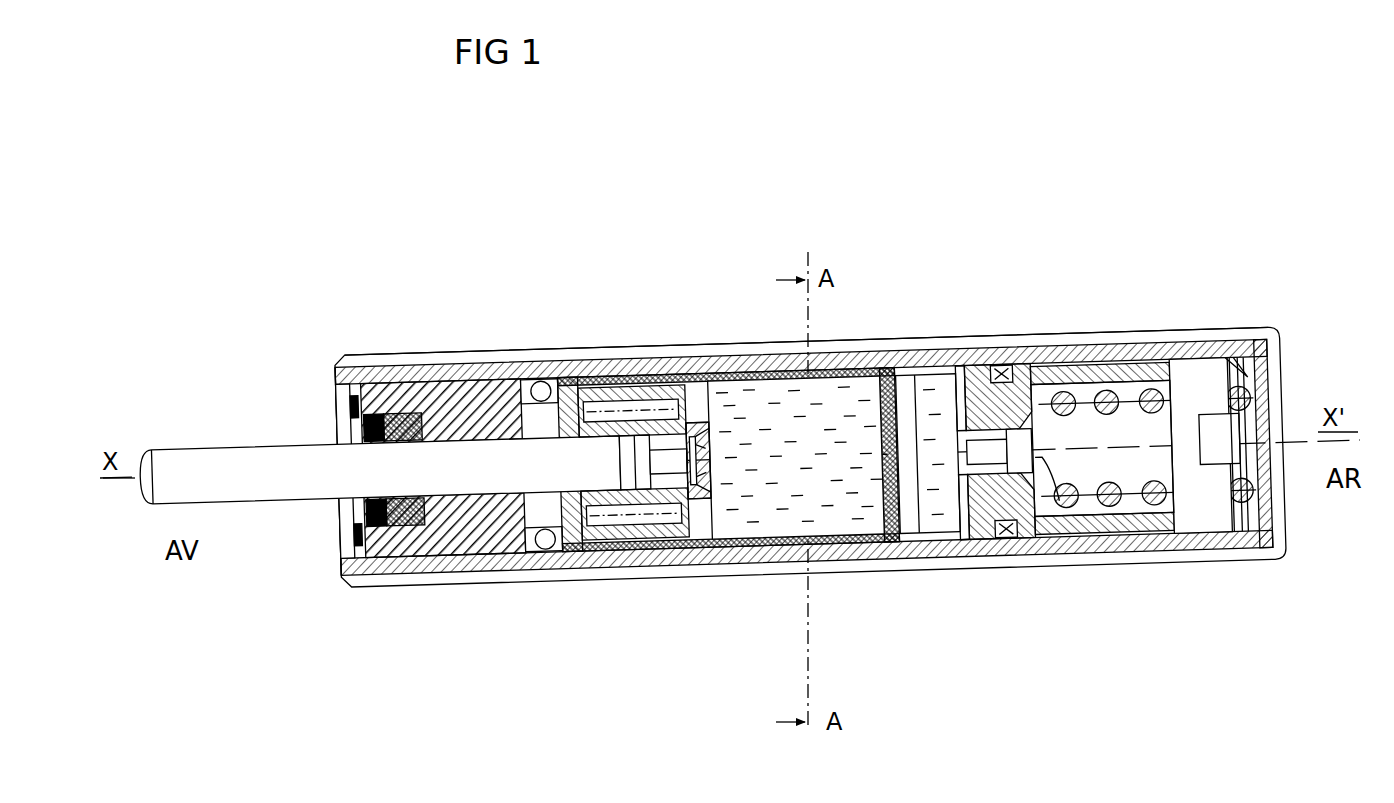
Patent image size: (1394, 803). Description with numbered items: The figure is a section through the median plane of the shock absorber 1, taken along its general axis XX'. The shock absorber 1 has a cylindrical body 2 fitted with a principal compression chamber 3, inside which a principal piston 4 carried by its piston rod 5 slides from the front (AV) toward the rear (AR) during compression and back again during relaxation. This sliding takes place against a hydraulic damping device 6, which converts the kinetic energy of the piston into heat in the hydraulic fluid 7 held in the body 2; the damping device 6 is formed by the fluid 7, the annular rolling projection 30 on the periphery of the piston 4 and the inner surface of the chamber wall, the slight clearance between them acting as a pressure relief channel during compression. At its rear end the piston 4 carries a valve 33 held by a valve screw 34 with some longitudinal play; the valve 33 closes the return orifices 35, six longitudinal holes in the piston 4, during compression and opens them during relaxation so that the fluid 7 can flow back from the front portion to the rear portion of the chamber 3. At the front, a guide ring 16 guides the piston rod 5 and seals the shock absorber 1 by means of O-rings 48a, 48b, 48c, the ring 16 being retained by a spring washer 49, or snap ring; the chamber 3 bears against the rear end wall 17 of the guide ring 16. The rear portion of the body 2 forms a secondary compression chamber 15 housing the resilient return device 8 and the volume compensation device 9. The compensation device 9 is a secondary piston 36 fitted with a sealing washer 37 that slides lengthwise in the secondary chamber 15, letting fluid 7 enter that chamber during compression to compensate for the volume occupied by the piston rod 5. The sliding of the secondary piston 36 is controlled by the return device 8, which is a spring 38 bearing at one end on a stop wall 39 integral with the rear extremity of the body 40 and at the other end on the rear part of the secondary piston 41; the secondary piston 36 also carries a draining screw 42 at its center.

The shock absorber 1 is at (825, 184).
The body 2 is at (406, 356).
The principal compression chamber 3 is at (766, 372).
The principal piston 4 is at (604, 362).
The piston rod 5 is at (190, 450).
The hydraulic damping device 6 is at (682, 535).
The hydraulic fluid 7 is at (838, 508).
The resilient return device 8 is at (1140, 320).
The volume compensation device 9 is at (960, 328).
The secondary compression chamber 15 is at (930, 528).
The guide ring 16 is at (437, 390).
The rear end wall of the guide ring 17 is at (604, 510).
The annular rolling projection 30 is at (684, 562).
The valve 33 is at (690, 382).
The valve screw 34 is at (704, 368).
The return orifices 35 is at (634, 372).
The secondary piston 36 is at (1071, 376).
The sealing washer 37 is at (1005, 546).
The spring 38 is at (1077, 398).
The stop wall 39 is at (1226, 352).
The rear extremity of the body 40 is at (1264, 344).
The rear part of the secondary piston 41 is at (1062, 512).
The draining screw 42 is at (1024, 400).
The O-ring 48a is at (547, 562).
The O-ring 48b is at (375, 568).
The O-ring 48c is at (410, 568).
The spring washer 49 is at (355, 372).